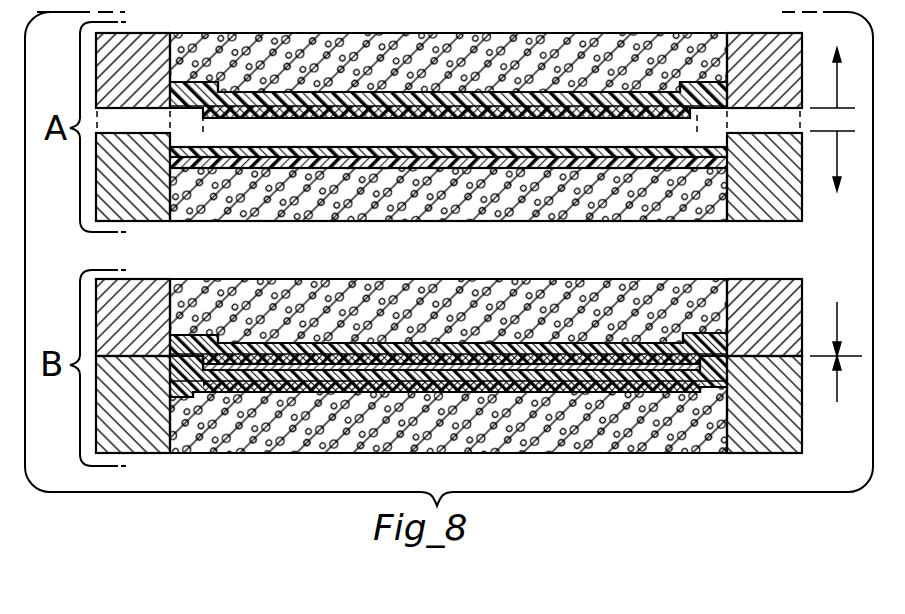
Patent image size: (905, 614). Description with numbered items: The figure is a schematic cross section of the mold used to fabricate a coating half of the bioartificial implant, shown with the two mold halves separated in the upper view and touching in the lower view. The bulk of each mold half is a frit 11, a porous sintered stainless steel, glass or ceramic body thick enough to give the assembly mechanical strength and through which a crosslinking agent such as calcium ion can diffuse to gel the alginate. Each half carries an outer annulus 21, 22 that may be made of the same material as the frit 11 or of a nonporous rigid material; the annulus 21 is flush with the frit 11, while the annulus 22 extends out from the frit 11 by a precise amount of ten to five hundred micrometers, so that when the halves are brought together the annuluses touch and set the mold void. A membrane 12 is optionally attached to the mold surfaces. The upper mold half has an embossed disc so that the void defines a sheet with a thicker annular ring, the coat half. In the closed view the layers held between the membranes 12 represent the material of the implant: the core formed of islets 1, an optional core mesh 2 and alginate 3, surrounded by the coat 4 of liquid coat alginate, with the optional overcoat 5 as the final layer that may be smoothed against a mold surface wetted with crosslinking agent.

The islets 1 is at (451, 424).
The core mesh 2 is at (451, 424).
The alginate 3 is at (451, 424).
The coat 4 is at (448, 301).
The overcoat 5 is at (372, 380).
The frit 11 is at (515, 46).
The membrane 12 is at (489, 97).
The annulus 21 is at (141, 48).
The annulus 22 is at (142, 208).